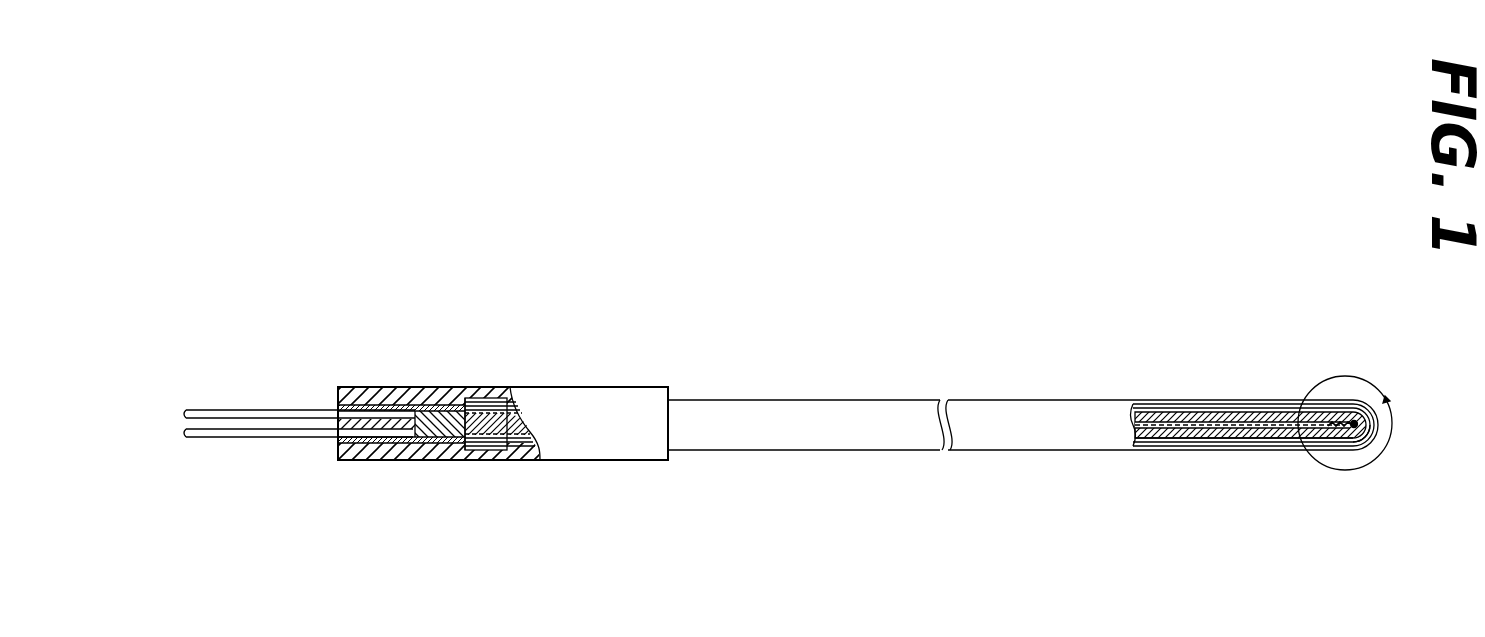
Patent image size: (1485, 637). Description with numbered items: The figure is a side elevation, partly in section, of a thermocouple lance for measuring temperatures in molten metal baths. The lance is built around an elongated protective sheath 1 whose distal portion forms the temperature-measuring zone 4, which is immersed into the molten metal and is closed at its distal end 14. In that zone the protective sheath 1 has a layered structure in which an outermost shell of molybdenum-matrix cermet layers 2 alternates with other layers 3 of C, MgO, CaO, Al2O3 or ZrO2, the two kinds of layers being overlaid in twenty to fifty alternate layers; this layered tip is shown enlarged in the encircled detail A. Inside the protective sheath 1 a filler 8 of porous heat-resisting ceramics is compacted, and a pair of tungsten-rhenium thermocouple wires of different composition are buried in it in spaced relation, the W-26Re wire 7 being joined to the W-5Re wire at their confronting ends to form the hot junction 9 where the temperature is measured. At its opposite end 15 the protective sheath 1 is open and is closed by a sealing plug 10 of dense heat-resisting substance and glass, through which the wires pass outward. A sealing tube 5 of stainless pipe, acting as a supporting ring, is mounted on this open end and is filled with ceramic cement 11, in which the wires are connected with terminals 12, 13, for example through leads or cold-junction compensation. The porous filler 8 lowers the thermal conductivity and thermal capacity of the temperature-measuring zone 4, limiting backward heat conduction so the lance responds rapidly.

The protective sheath 1 is at (840, 412).
The cermet layers 2 is at (1038, 415).
The other layers 3 is at (1280, 443).
The temperature-measuring zone 4 is at (1342, 420).
The sealing tube 5 is at (397, 387).
The W-26Re thermocouple wire 7 is at (500, 434).
The filler 8 is at (1250, 422).
The hot junction 9 is at (1373, 413).
The sealing plug 10 is at (503, 417).
The ceramic cement 11 is at (438, 423).
The terminal 12 is at (256, 412).
The terminal 13 is at (251, 432).
The distal end 14 is at (1373, 442).
The opposite end 15 is at (448, 432).
The detail region A is at (1365, 377).